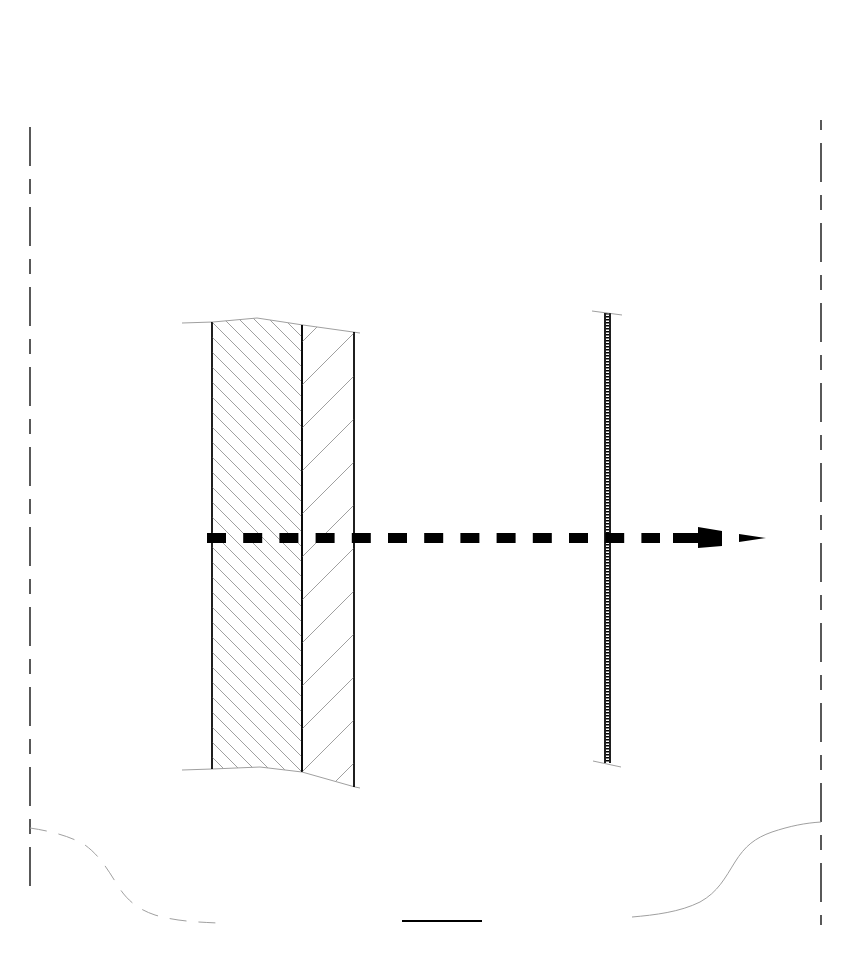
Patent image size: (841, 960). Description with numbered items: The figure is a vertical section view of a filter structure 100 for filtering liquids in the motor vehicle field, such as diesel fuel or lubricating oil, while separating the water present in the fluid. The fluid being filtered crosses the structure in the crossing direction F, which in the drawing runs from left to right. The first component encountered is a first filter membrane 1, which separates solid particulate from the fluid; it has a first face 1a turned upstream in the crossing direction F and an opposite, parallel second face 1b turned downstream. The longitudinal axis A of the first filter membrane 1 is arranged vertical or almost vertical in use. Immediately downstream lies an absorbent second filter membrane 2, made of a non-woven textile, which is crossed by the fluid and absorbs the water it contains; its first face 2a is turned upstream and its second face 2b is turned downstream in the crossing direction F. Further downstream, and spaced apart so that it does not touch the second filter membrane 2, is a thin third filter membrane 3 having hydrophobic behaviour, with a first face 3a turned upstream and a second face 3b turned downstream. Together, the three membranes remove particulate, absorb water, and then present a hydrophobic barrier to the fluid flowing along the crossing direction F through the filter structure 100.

The filter structure 100 is at (183, 114).
The first filter membrane 1 is at (271, 317).
The first face of the first filter membrane 1a is at (212, 424).
The second face of the first filter membrane 1b is at (297, 451).
The absorbent second filter membrane 2 is at (353, 322).
The first face of the second filter membrane 2a is at (302, 592).
The second face of the second filter membrane 2b is at (355, 655).
The third filter membrane 3 is at (614, 305).
The first face of the third filter membrane 3a is at (605, 625).
The second face of the third filter membrane 3b is at (607, 612).
The crossing direction F is at (432, 532).
The longitudinal axis A is at (425, 878).